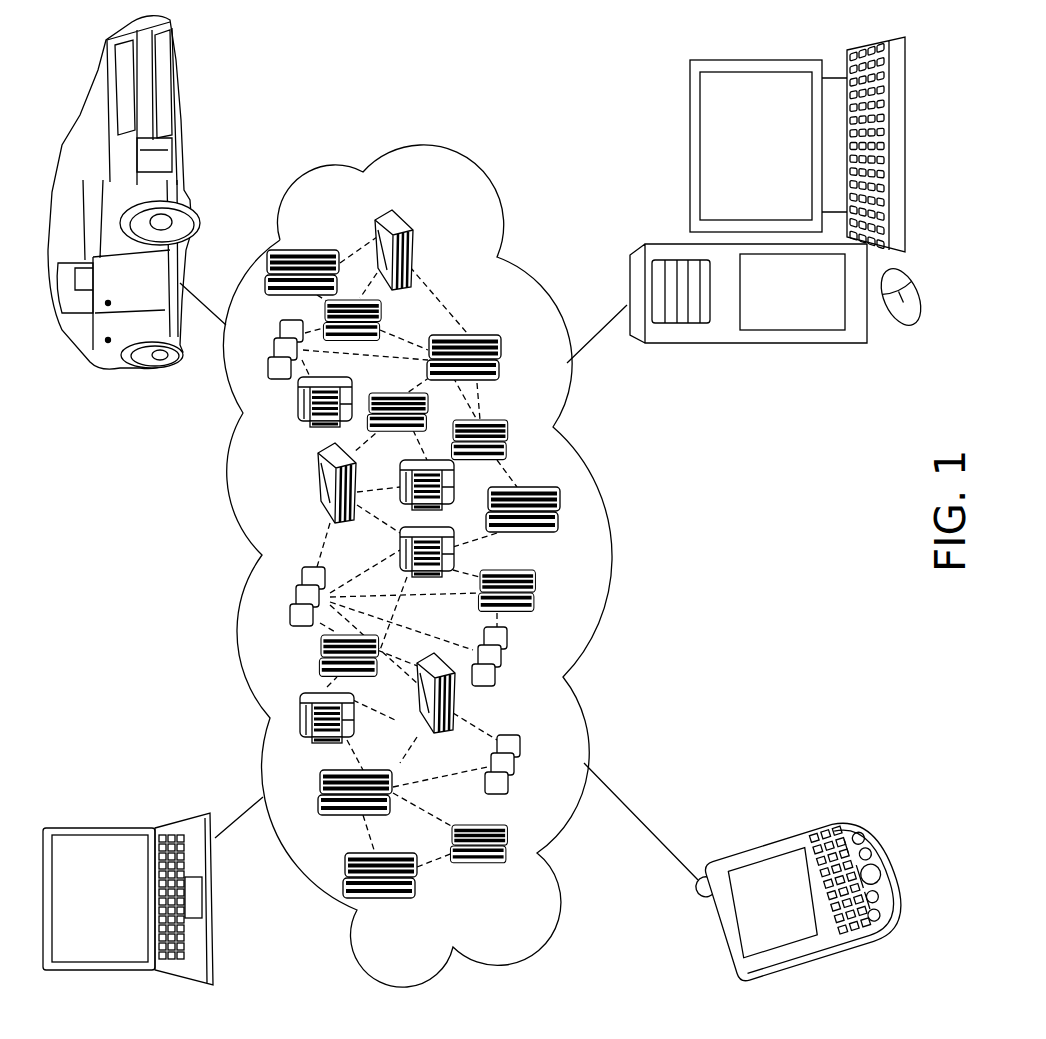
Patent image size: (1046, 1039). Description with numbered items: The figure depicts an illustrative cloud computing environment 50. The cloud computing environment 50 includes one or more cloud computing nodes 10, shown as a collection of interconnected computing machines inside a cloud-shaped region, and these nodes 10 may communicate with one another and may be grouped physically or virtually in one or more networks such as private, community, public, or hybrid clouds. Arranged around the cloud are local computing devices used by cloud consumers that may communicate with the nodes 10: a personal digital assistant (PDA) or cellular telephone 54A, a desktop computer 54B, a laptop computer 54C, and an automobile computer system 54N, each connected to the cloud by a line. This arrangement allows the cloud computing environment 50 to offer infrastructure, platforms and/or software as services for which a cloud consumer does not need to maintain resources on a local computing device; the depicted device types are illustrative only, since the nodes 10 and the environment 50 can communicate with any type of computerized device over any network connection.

The cloud computing nodes 10 is at (424, 205).
The cloud computing environment 50 is at (390, 148).
The personal digital assistant (PDA) or cellular telephone 54A is at (785, 838).
The desktop computer 54B is at (689, 149).
The laptop computer 54C is at (108, 828).
The automobile computer system 54N is at (120, 352).